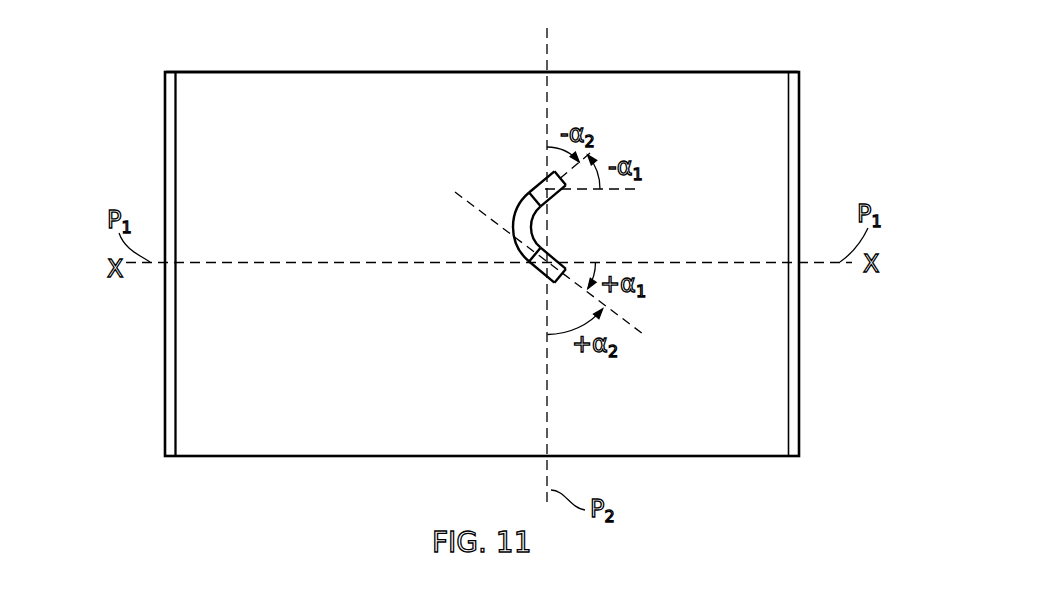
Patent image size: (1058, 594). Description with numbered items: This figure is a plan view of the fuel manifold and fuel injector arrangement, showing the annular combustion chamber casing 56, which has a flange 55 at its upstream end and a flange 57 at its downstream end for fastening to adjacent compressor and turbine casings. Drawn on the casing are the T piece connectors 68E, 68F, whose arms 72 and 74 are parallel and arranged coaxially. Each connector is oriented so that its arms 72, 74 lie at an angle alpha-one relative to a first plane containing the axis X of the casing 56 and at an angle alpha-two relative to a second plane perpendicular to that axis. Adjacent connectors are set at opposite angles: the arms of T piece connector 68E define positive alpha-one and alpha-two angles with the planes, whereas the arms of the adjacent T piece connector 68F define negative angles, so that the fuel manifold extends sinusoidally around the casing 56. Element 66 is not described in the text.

The flange 55 is at (171, 118).
The annular combustion chamber casing 56 is at (390, 70).
The flange 57 is at (790, 133).
The curved vane body 66 is at (511, 221).
The T piece connector 68E is at (538, 276).
The T piece connector 68F is at (536, 184).
The arm 72 is at (571, 192).
The arm 74 is at (527, 193).